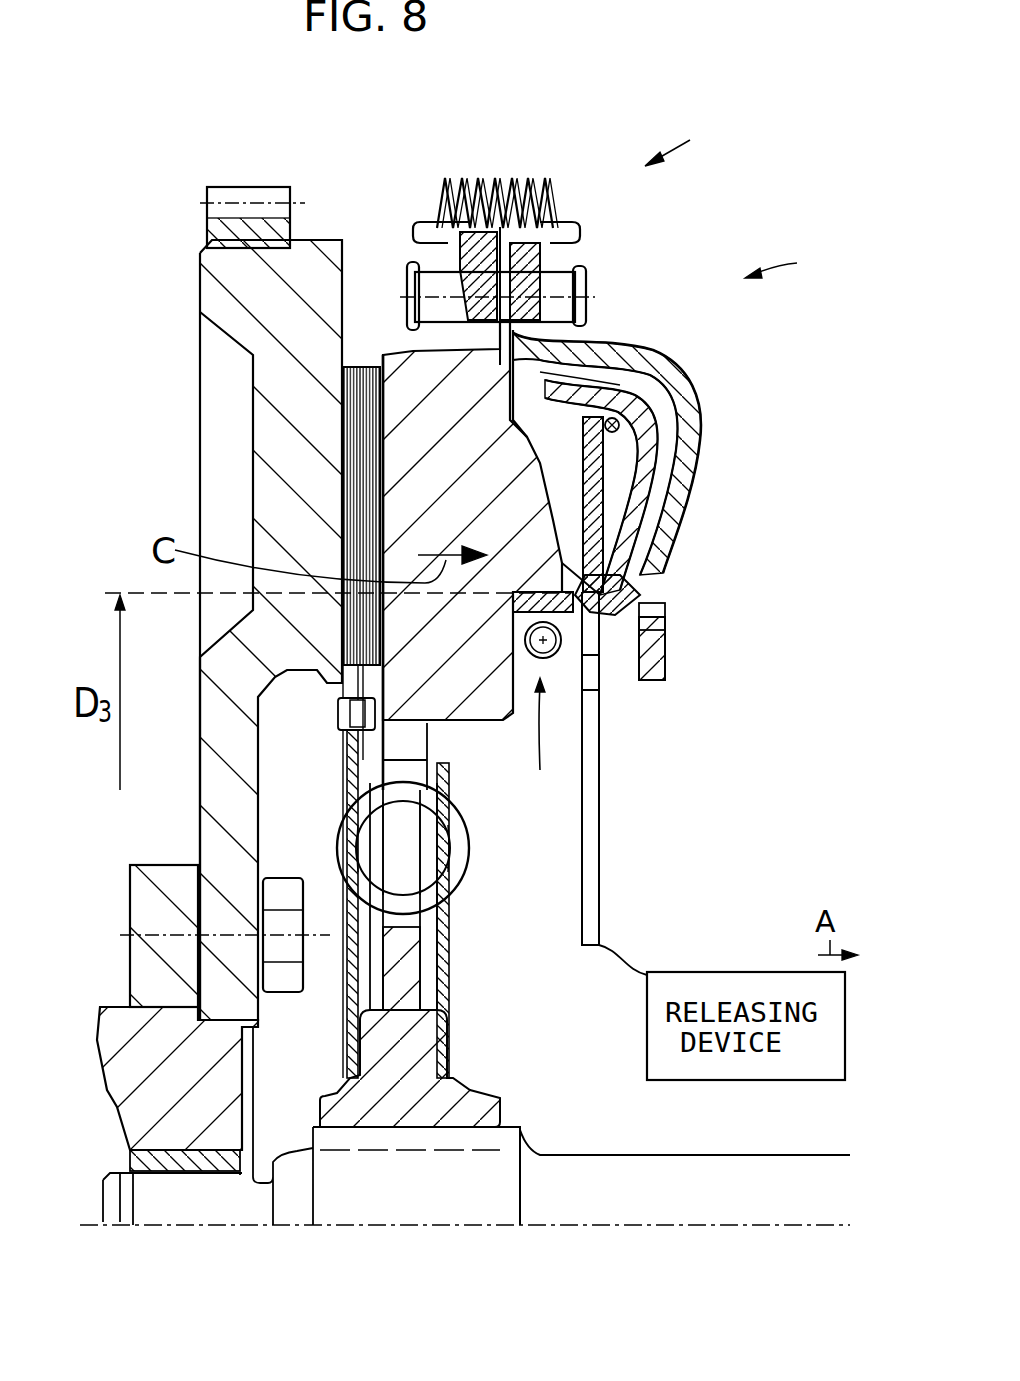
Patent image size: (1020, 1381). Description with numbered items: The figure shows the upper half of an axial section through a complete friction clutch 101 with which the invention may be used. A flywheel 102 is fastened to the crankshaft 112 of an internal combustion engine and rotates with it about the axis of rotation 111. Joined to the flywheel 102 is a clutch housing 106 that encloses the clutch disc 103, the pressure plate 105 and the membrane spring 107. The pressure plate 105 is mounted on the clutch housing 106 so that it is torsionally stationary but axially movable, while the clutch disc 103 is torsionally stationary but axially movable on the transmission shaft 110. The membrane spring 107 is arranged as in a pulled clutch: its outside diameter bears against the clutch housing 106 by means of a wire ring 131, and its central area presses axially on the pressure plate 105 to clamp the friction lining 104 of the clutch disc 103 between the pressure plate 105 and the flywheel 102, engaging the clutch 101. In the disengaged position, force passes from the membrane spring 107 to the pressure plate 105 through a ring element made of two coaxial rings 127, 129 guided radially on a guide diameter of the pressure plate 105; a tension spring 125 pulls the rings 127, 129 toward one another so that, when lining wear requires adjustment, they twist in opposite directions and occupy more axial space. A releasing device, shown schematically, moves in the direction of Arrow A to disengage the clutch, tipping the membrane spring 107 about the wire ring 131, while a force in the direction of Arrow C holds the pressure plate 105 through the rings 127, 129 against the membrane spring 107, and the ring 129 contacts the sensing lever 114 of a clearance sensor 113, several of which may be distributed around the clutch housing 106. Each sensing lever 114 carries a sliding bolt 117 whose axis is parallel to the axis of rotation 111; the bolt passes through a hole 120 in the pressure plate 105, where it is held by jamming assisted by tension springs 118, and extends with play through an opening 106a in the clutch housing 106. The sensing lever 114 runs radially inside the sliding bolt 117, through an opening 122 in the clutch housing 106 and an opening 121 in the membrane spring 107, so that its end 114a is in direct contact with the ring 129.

The friction clutch 101 is at (695, 138).
The flywheel 102 is at (230, 273).
The clutch disc 103 is at (306, 770).
The friction lining 104 is at (385, 480).
The pressure plate 105 is at (427, 365).
The clutch housing 106 is at (657, 656).
The opening 106a is at (637, 347).
The membrane spring 107 is at (663, 568).
The transmission shaft 110 is at (745, 1215).
The axis of rotation 111 is at (523, 1218).
The crankshaft 112 is at (147, 953).
The clearance sensor 113 is at (797, 264).
The sensing lever 114 is at (693, 421).
The end 114a is at (647, 609).
The sliding bolt 117 is at (525, 311).
The tension springs 118 is at (483, 177).
The hole 120 is at (585, 285).
The opening 121 is at (593, 650).
The opening 122 is at (660, 481).
The tension spring 125 is at (547, 663).
The ring 127 is at (610, 602).
The ring 129 is at (652, 631).
The wire ring 131 is at (622, 420).